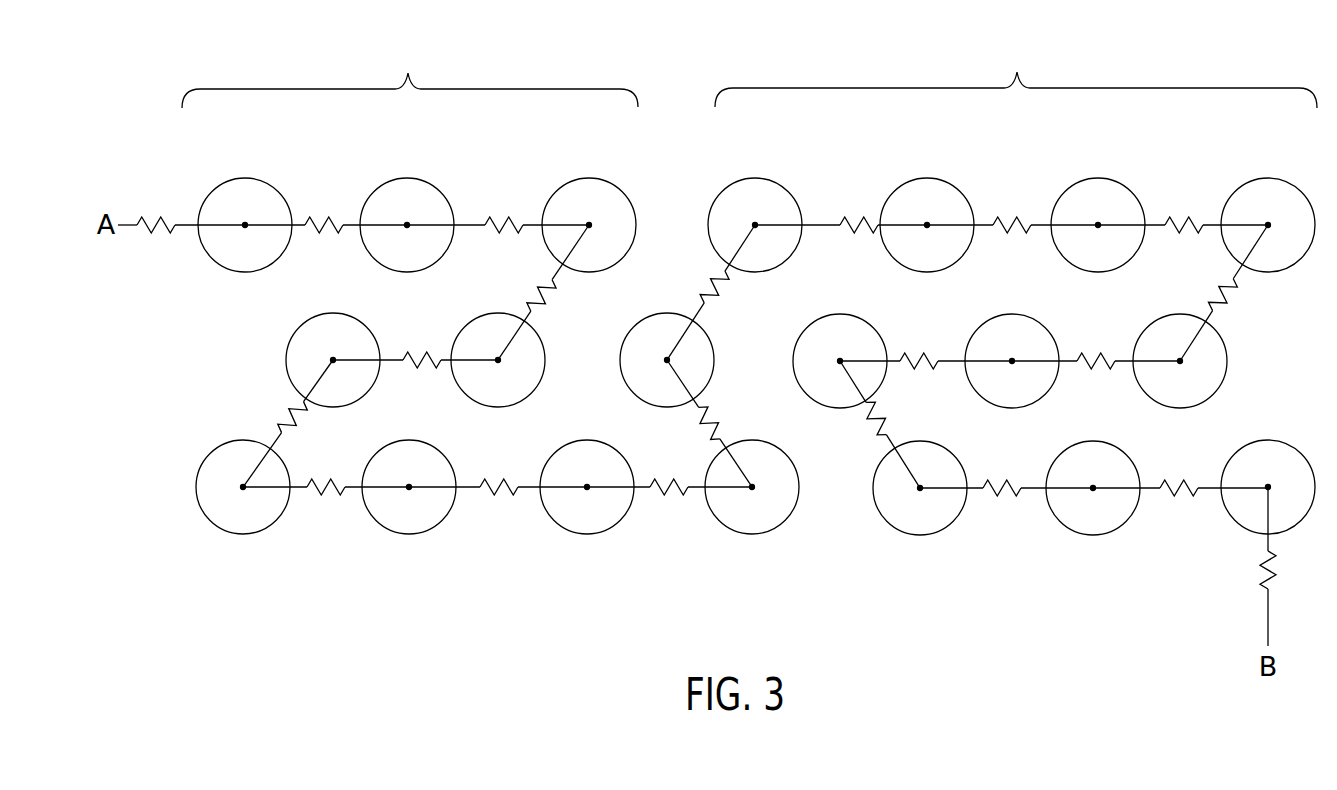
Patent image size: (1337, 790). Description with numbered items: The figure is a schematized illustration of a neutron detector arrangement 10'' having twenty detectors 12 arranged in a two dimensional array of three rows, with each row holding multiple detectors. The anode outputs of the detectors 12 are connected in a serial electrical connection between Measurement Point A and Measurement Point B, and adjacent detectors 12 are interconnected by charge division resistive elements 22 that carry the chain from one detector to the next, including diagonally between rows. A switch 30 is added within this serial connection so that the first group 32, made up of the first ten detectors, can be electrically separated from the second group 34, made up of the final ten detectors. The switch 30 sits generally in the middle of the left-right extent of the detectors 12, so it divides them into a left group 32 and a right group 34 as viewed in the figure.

The detector 12 is at (755, 326).
The resistive element 22 is at (724, 401).
The switch 30 is at (708, 283).
The first group 32 is at (410, 73).
The second group 34 is at (1016, 72).
The detector arrangement 10'' is at (742, 43).